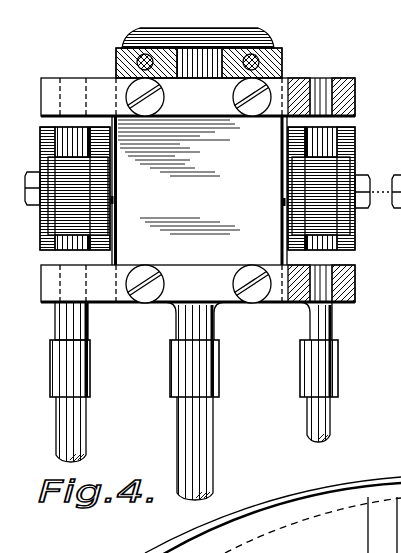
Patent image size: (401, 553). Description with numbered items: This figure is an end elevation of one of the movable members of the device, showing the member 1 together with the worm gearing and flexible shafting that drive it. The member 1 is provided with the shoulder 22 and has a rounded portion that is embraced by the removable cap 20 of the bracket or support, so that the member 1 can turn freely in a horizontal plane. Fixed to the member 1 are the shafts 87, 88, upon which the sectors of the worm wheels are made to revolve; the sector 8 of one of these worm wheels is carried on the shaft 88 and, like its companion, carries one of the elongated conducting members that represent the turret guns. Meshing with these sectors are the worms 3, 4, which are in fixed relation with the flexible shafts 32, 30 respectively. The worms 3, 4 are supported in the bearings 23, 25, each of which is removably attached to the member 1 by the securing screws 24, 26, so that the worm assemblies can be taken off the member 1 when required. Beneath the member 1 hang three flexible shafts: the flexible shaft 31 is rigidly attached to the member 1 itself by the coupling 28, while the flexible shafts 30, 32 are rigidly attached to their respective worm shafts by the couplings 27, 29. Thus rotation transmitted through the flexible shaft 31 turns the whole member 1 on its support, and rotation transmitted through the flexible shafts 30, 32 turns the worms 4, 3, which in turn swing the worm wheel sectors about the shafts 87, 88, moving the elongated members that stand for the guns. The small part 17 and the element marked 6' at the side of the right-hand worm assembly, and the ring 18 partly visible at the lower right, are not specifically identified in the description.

The member 1 is at (199, 190).
The worm 3 is at (343, 227).
The worm 4 is at (48, 232).
The bolt head 6' is at (386, 221).
The sector of worm wheel 8 is at (38, 143).
The screw sleeve 17 is at (355, 160).
The ring 18 is at (367, 533).
The removable cap 20 is at (283, 66).
The shoulder 22 is at (263, 36).
The bearing 23 is at (110, 77).
The securing screws 24 is at (150, 112).
The bearing 25 is at (108, 304).
The securing screws 26 is at (252, 270).
The coupling 27 is at (86, 364).
The coupling 28 is at (216, 370).
The coupling 29 is at (335, 365).
The flexible shaft 30 is at (80, 422).
The flexible shaft 31 is at (213, 420).
The flexible shaft 32 is at (330, 417).
The shaft 87 is at (282, 204).
The shaft 88 is at (118, 201).